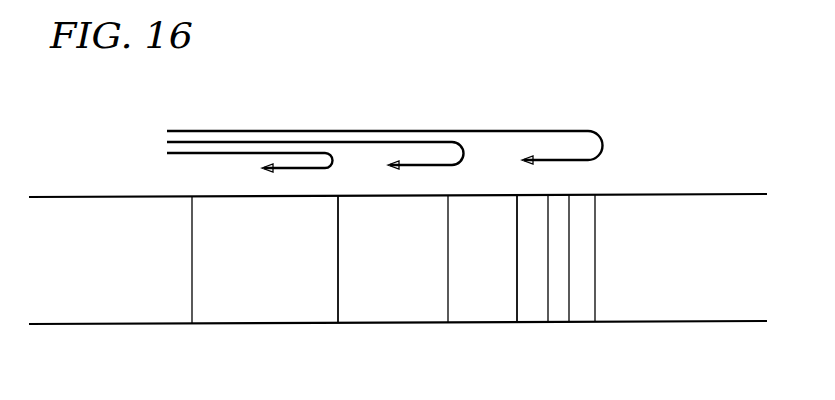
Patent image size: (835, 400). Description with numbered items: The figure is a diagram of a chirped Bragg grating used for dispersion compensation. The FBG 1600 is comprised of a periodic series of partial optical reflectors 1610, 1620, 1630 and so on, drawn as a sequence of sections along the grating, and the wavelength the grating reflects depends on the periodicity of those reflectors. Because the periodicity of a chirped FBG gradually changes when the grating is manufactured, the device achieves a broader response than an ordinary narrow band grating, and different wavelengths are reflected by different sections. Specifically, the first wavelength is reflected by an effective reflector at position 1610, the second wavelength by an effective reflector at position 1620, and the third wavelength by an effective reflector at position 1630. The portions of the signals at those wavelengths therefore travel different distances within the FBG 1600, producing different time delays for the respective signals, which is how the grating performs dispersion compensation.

The FBG 1600 is at (407, 108).
The partial optical reflector 1610 is at (265, 279).
The partial optical reflector 1620 is at (427, 278).
The partial optical reflector 1630 is at (556, 278).